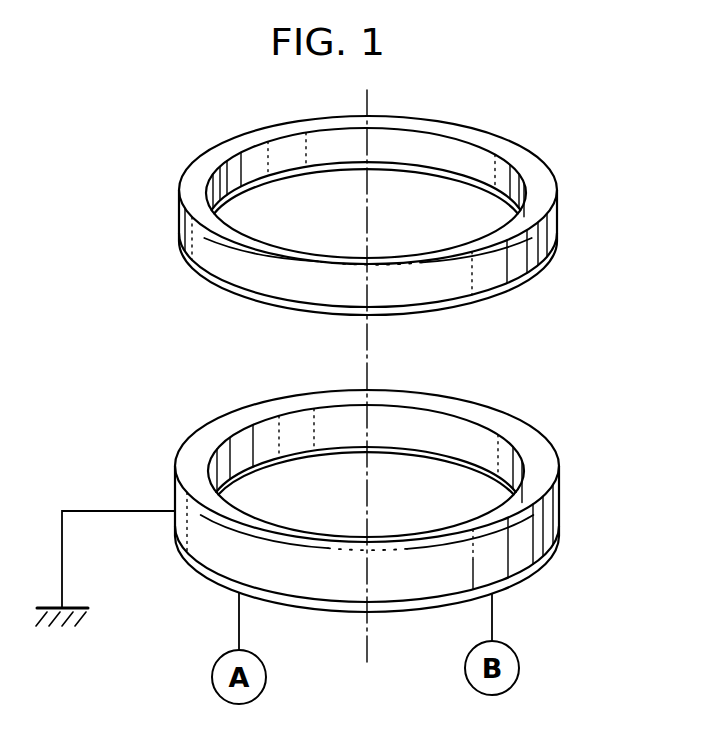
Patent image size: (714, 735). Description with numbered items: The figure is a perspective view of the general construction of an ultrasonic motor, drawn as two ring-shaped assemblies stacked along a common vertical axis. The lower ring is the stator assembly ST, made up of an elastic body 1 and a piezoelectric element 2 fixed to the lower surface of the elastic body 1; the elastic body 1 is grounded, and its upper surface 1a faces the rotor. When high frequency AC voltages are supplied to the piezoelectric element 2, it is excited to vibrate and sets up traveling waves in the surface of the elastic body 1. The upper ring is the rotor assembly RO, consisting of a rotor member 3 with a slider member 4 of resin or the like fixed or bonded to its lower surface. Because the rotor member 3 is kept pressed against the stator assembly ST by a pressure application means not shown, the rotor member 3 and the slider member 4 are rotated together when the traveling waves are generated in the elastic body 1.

The elastic body 1 is at (545, 465).
The top surface of stator ring 1a is at (518, 438).
The piezoelectric element 2 is at (548, 562).
The rotor member 3 is at (556, 226).
The slider member 4 is at (525, 278).
The rotor assembly RO is at (623, 188).
The stator assembly ST is at (617, 425).